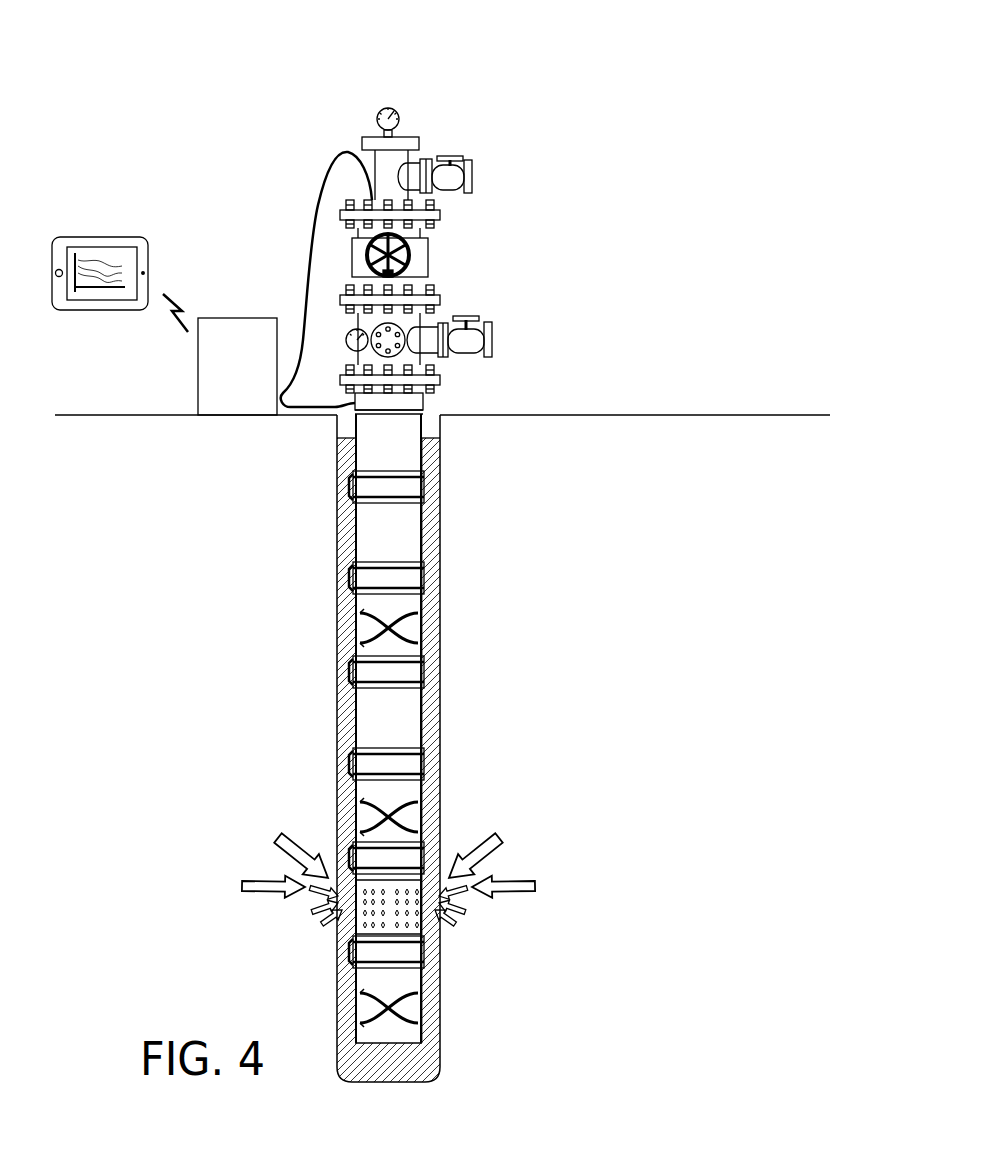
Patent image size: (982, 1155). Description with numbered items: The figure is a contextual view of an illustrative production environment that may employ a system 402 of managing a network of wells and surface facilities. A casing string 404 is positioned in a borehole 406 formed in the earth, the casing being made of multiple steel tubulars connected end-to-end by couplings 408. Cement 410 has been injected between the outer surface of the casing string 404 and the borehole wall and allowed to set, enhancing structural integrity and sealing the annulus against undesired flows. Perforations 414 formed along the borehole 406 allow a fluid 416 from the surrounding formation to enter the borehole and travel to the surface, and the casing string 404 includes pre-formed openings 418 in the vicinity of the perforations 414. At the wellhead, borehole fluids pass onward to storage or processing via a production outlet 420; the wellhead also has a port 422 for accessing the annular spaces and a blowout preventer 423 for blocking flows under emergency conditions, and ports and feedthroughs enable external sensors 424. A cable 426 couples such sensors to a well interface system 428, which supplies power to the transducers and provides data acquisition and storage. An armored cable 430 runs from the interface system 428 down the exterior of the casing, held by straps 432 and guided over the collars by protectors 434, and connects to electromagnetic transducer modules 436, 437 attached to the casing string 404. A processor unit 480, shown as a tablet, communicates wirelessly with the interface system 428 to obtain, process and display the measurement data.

The system 402 is at (474, 84).
The casing string 404 is at (420, 447).
The borehole 406 is at (335, 423).
The couplings 408 is at (418, 580).
The cement 410 is at (348, 532).
The perforations 414 is at (432, 903).
The fluid 416 is at (391, 879).
The pre-formed openings 418 is at (422, 927).
The production outlet 420 is at (459, 161).
The port 422 is at (462, 318).
The blowout preventer 423 is at (430, 258).
The external sensors 424 is at (378, 118).
The cable 426 is at (317, 189).
The well interface system 428 is at (198, 372).
The armored cable 430 is at (343, 401).
The straps 432 is at (440, 418).
The protectors 434 is at (348, 493).
The electromagnetic transducer modules 436 is at (358, 618).
The transducer modules 437 is at (353, 793).
The processor unit 480 is at (93, 311).